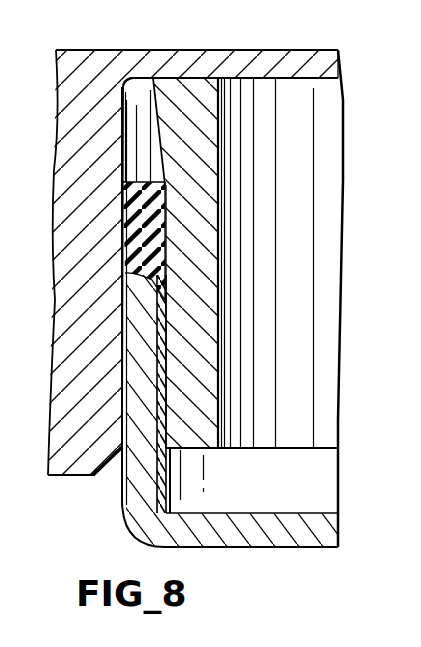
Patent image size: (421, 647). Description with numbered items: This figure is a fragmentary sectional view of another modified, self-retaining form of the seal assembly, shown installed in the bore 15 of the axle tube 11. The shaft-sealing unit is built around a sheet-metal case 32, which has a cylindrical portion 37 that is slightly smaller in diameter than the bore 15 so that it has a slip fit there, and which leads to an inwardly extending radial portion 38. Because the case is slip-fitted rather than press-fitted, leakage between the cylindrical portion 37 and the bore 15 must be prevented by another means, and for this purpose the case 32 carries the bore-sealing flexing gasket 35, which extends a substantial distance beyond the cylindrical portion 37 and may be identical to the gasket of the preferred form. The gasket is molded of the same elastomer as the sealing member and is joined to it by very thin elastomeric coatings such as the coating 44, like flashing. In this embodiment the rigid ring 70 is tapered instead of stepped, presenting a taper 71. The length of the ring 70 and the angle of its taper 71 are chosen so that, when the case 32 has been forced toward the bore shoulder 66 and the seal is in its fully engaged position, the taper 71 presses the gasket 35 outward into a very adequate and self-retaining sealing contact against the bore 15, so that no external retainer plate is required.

The axle tube 11 is at (60, 190).
The bore 15 is at (128, 131).
The metal case 32 is at (124, 478).
The bore-sealing flexing gasket 35 is at (127, 258).
The cylindrical portion 37 is at (133, 408).
The radial portion 38 is at (267, 513).
The thin elastomeric coating 44 is at (157, 440).
The bore shoulder 66 is at (278, 50).
The rigid ring 70 is at (222, 218).
The taper 71 is at (152, 101).